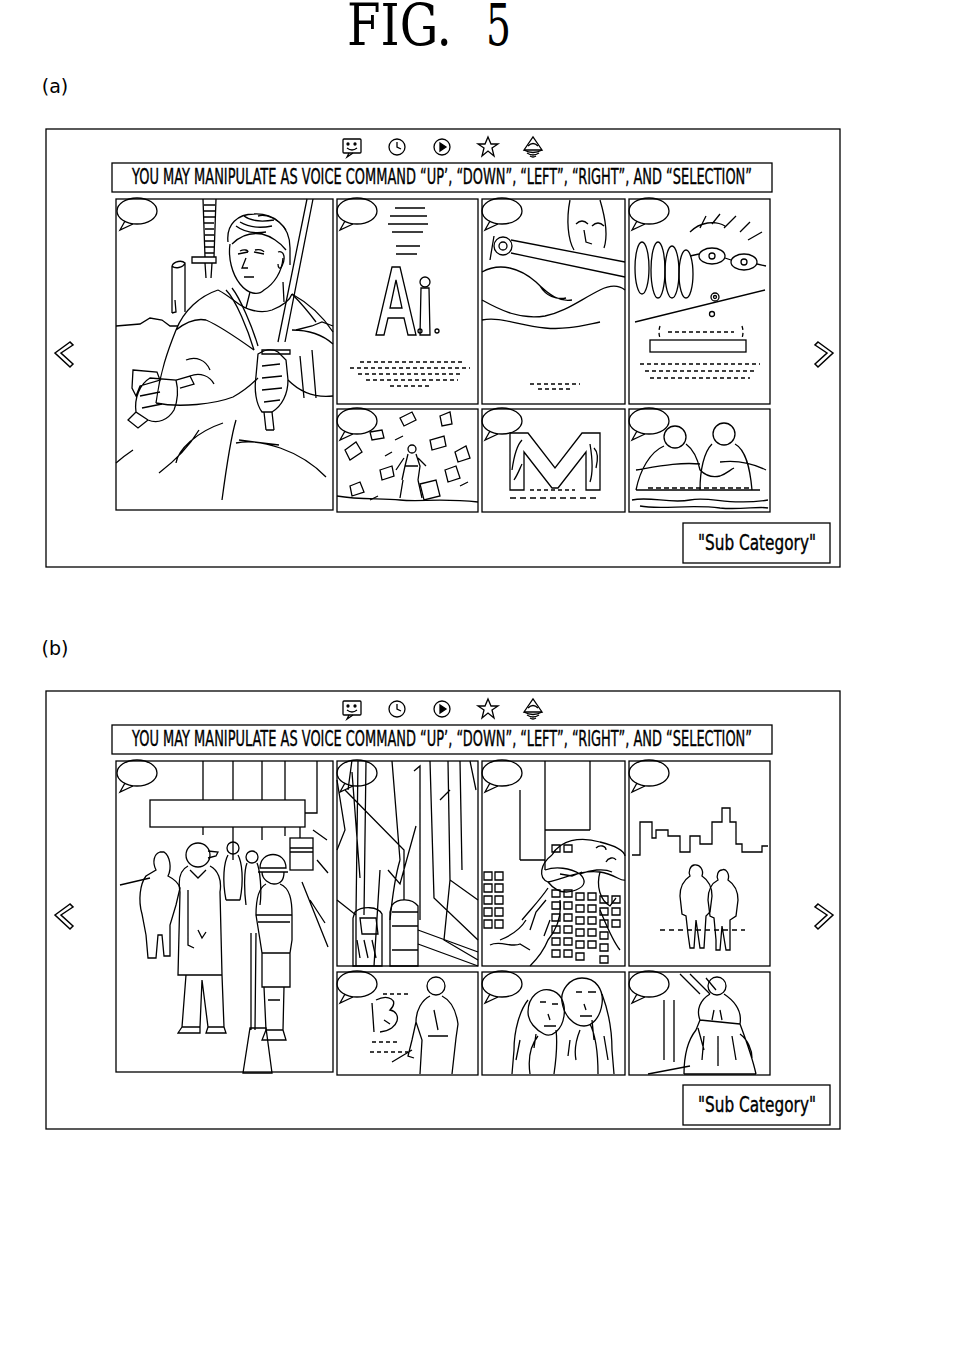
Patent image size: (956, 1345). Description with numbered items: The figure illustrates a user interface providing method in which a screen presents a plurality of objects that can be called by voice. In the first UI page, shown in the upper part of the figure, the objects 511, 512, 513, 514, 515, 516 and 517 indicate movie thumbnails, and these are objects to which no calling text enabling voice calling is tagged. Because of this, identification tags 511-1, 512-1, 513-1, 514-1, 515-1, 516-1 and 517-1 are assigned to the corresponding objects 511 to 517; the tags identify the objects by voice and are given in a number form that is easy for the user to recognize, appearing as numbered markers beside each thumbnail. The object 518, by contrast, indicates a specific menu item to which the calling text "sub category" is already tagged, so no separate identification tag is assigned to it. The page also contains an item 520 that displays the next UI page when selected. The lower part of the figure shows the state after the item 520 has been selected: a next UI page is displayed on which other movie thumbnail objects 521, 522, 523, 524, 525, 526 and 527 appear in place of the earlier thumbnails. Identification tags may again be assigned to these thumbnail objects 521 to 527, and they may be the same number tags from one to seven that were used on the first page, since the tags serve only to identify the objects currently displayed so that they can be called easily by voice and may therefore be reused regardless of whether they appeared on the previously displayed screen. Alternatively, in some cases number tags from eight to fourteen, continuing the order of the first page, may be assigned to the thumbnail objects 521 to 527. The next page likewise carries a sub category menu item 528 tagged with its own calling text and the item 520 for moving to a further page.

The object 511 is at (262, 512).
The identification tag 511-1 is at (140, 200).
The object 512 is at (415, 199).
The identification tag 512-1 is at (340, 200).
The object 513 is at (560, 199).
The identification tag 513-1 is at (487, 200).
The object 514 is at (728, 199).
The identification tag 514-1 is at (633, 200).
The object 515 is at (409, 512).
The identification tag 515-1 is at (364, 430).
The object 516 is at (566, 512).
The identification tag 516-1 is at (505, 432).
The object 517 is at (676, 512).
The identification tag 517-1 is at (648, 488).
The object 518 is at (759, 563).
The item 520 is at (819, 342).
The movie thumbnail object 521 is at (262, 1074).
The movie thumbnail object 522 is at (415, 761).
The movie thumbnail object 523 is at (560, 761).
The movie thumbnail object 524 is at (728, 761).
The movie thumbnail object 525 is at (409, 1074).
The movie thumbnail object 526 is at (566, 1074).
The movie thumbnail object 527 is at (676, 1074).
The sub category button 528 is at (759, 1125).